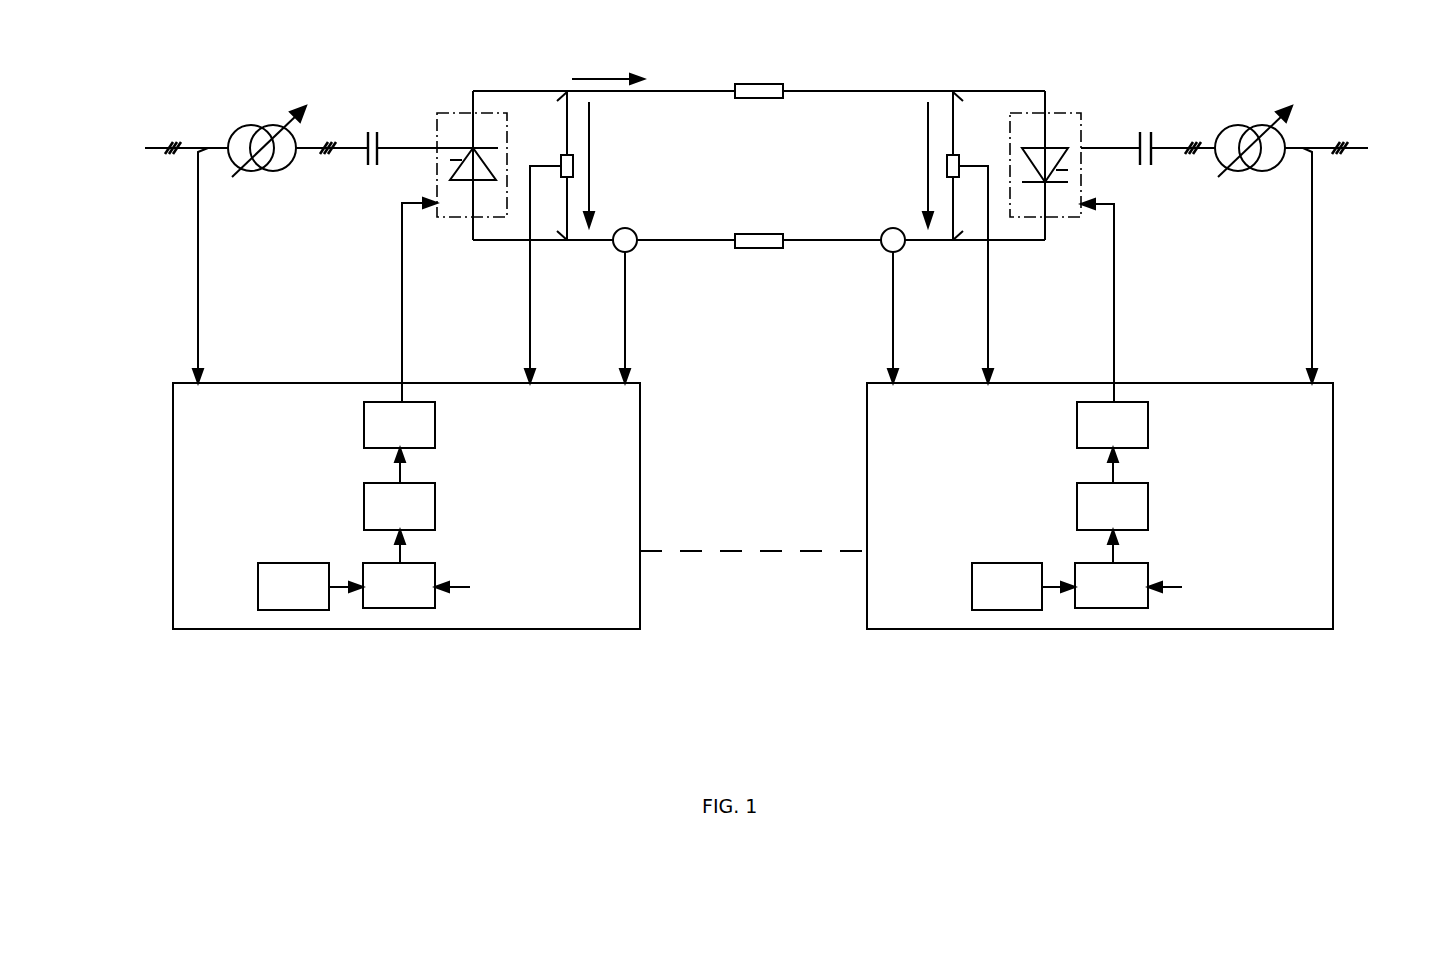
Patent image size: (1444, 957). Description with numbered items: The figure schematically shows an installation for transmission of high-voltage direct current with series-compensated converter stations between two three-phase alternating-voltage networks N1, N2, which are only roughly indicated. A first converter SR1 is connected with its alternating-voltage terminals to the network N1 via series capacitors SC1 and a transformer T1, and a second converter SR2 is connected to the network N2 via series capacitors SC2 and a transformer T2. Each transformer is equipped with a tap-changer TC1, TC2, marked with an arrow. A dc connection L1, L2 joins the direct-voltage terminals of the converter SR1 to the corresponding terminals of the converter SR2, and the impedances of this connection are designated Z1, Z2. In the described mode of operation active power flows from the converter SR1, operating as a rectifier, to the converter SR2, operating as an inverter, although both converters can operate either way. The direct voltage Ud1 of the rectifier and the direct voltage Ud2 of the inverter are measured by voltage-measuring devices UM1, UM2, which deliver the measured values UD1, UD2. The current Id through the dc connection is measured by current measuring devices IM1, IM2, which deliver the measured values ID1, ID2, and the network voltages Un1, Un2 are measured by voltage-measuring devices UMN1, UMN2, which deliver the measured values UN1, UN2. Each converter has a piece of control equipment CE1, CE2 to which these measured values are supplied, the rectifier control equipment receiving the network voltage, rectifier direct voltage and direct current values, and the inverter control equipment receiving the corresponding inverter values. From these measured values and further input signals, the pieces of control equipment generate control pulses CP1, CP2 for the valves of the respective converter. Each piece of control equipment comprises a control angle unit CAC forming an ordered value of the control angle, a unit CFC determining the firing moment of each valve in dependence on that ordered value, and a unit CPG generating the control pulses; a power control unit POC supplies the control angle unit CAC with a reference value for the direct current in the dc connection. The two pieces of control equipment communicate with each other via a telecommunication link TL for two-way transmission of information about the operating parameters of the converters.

The dc connection conductor L1 is at (661, 91).
The dc connection conductor L2 is at (661, 240).
The impedance of the dc connection Z1 is at (760, 84).
The impedance of the dc connection Z2 is at (760, 234).
The direct current Id is at (608, 68).
The first converter SR1 is at (437, 127).
The second converter SR2 is at (1081, 127).
The alternating-voltage network voltage Un1 is at (175, 133).
The alternating-voltage network voltage Un2 is at (1340, 133).
The three-phase alternating-voltage network N1 is at (152, 150).
The three-phase alternating-voltage network N2 is at (1355, 150).
The voltage-measuring device UMN1 is at (208, 144).
The voltage-measuring device UMN2 is at (1308, 144).
The measured network voltage value UN1 is at (176, 291).
The measured network voltage value UN2 is at (1332, 291).
The transformer T1 is at (233, 127).
The transformer T2 is at (1218, 127).
The tap-changer TC1 is at (285, 112).
The tap-changer TC2 is at (1265, 112).
The series capacitors SC1 is at (366, 132).
The series capacitors SC2 is at (1152, 132).
The voltage-measuring device UM1 is at (561, 158).
The voltage-measuring device UM2 is at (960, 158).
The direct voltage of the rectifier Ud1 is at (608, 164).
The direct voltage of the inverter Ud2 is at (908, 164).
The measured direct voltage value UD1 is at (520, 274).
The measured direct voltage value UD2 is at (996, 274).
The measured direct current value ID1 is at (606, 317).
The measured direct current value ID2 is at (910, 317).
The current measuring device IM1 is at (636, 248).
The current measuring device IM2 is at (882, 248).
The control pulses CP1 is at (422, 300).
The control pulses CP2 is at (1089, 300).
The control equipment CE1 is at (608, 430).
The control equipment CE2 is at (957, 430).
The telecommunication link TL is at (737, 551).
The control pulse generating unit CPG is at (756, 425).
The firing control unit CFC is at (756, 489).
The control angle unit CAC is at (772, 569).
The power control unit POC is at (666, 586).